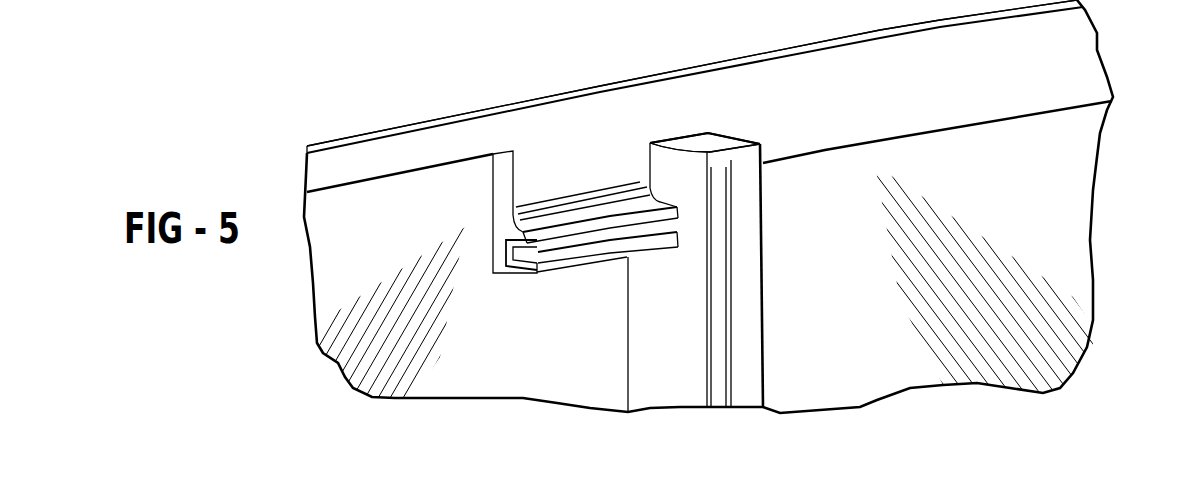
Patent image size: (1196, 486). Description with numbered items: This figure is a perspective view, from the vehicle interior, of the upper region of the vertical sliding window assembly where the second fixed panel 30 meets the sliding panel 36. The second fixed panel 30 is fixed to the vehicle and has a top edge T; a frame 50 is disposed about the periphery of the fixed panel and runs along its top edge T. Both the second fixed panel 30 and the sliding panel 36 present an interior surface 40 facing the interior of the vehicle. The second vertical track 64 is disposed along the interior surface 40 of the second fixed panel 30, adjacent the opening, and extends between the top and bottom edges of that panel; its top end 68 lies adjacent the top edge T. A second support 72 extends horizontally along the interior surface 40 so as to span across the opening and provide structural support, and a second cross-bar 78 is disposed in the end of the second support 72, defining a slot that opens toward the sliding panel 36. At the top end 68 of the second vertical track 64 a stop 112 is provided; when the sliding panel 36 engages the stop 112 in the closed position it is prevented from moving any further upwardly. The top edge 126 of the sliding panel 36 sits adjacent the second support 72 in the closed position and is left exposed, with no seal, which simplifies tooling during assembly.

The top edge T is at (667, 56).
The second fixed panel 30 is at (322, 268).
The sliding panel 36 is at (1082, 143).
The interior surface 40 is at (533, 356).
The frame 50 is at (415, 153).
The second vertical track 64 is at (640, 289).
The top end 68 is at (752, 212).
The second support 72 is at (558, 172).
The second cross-bar 78 is at (506, 250).
The stop 112 is at (683, 141).
The top edge 126 is at (996, 133).